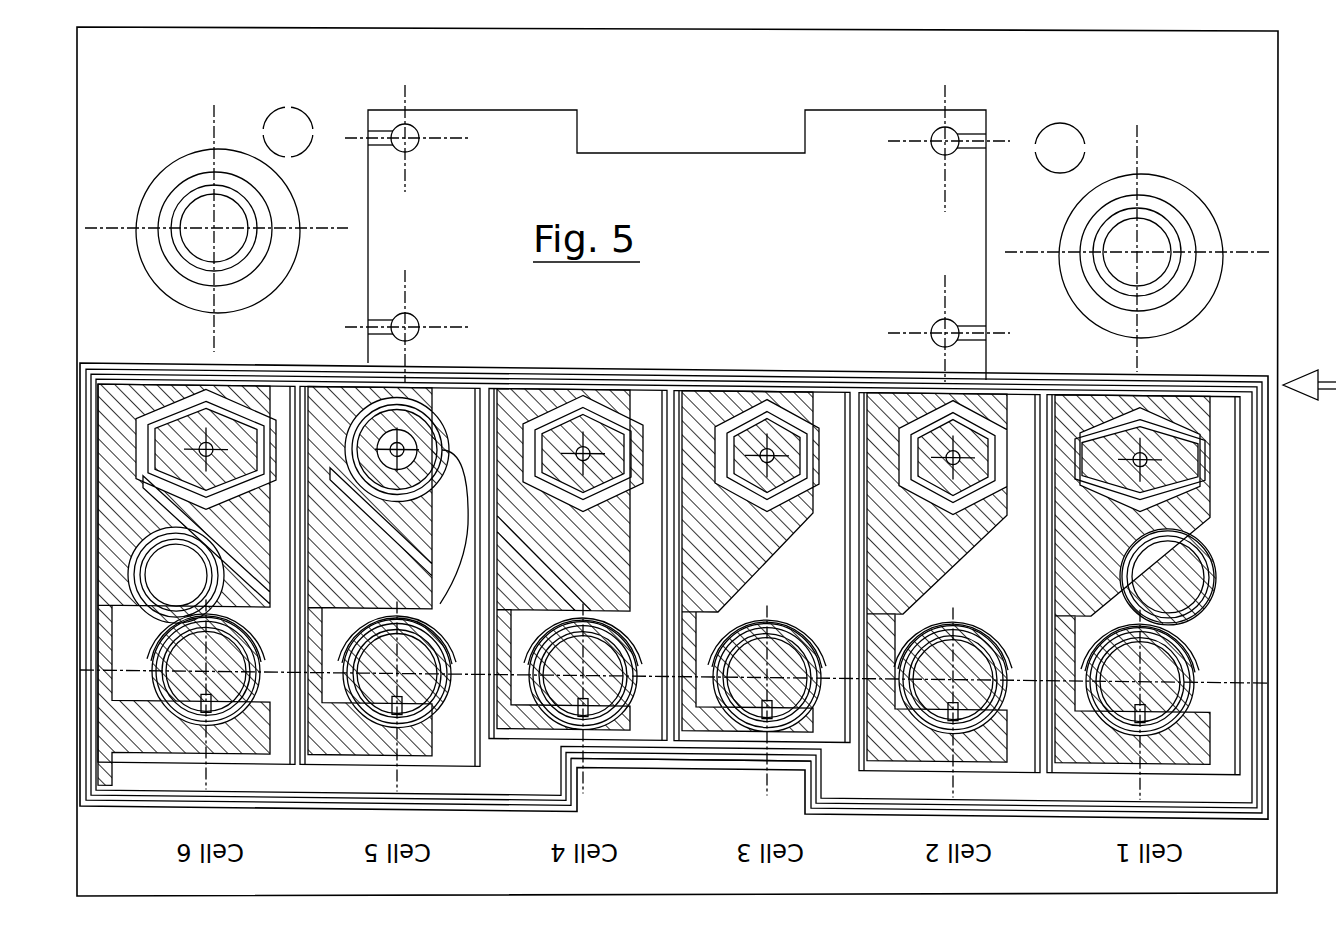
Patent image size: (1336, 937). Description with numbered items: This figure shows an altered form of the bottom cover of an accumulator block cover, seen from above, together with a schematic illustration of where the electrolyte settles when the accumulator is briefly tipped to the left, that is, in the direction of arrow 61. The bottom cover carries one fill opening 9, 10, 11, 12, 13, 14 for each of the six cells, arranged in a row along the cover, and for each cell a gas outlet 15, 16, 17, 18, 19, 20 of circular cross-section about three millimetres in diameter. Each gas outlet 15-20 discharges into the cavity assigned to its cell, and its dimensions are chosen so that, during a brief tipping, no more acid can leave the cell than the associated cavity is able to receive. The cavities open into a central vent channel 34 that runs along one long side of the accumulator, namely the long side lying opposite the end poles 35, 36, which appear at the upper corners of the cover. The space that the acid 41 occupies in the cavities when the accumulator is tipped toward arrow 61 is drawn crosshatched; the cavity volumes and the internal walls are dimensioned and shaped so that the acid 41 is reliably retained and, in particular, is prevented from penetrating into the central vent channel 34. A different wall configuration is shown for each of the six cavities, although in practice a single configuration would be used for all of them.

The fill opening 9 is at (188, 689).
The fill opening 10 is at (372, 691).
The fill opening 11 is at (563, 694).
The fill opening 12 is at (750, 692).
The fill opening 13 is at (930, 690).
The fill opening 14 is at (1120, 687).
The gas outlet 15 is at (182, 384).
The gas outlet 16 is at (397, 444).
The gas outlet 17 is at (583, 444).
The gas outlet 18 is at (767, 447).
The gas outlet 19 is at (953, 451).
The gas outlet 20 is at (1145, 449).
The central vent channel 34 is at (625, 731).
The end pole 35 is at (200, 212).
The end pole 36 is at (1148, 238).
The acid 41 is at (113, 380).
The arrow 61 is at (1325, 372).